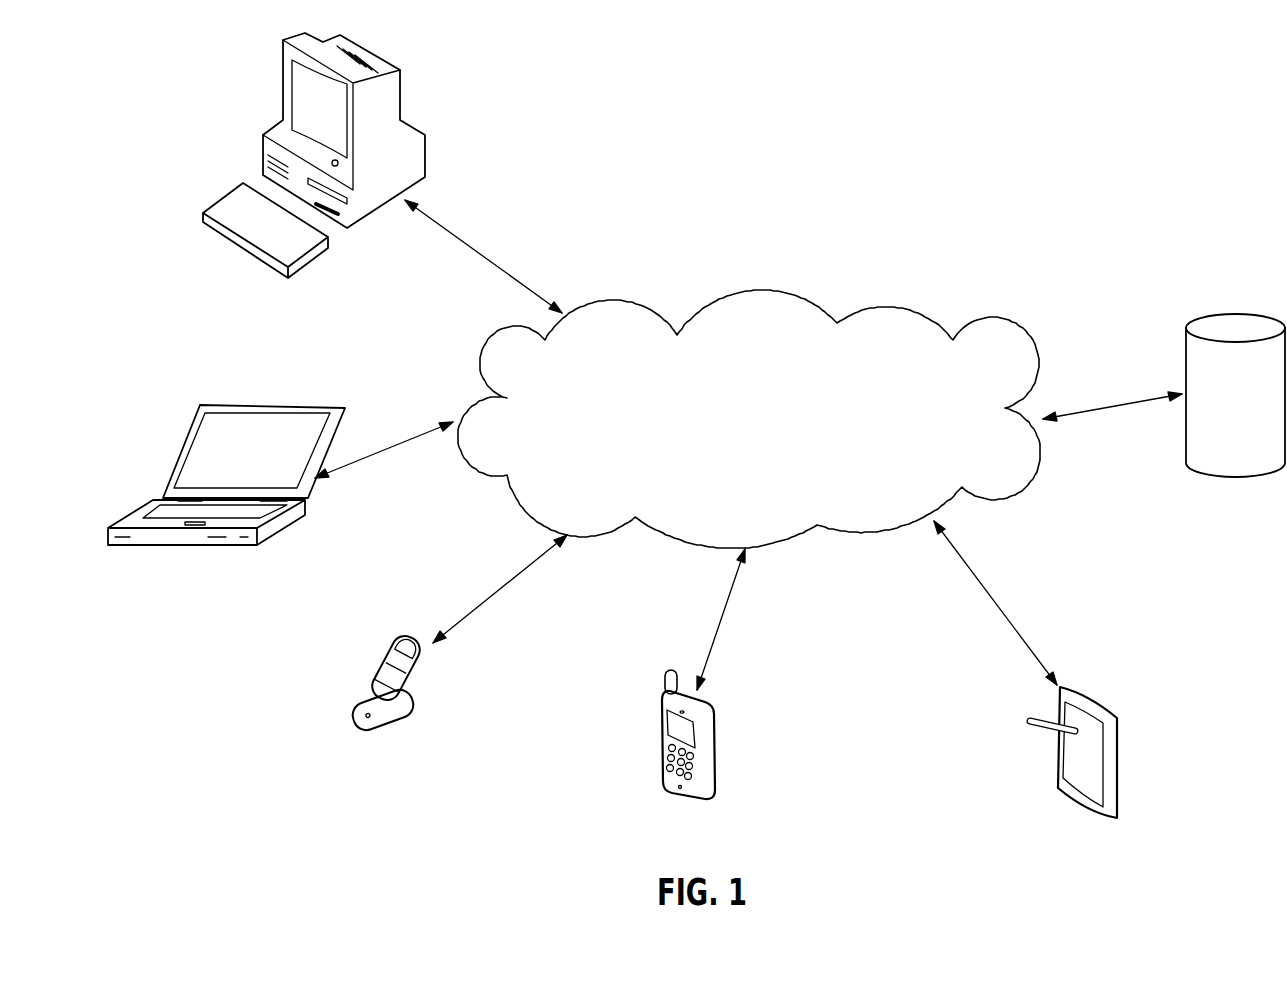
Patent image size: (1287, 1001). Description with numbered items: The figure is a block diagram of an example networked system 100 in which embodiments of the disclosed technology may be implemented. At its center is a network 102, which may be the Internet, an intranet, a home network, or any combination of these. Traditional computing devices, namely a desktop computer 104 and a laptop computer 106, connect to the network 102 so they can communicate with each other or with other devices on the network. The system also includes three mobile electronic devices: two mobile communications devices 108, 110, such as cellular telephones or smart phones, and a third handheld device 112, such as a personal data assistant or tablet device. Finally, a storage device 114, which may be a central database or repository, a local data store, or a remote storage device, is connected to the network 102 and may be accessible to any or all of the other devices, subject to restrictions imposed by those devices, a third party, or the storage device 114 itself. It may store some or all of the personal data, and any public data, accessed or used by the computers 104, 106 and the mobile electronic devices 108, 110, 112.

The networked system 100 is at (1043, 104).
The network 102 is at (723, 489).
The desktop computer 104 is at (382, 173).
The laptop computer 106 is at (280, 475).
The mobile electronic device 108 is at (448, 634).
The mobile electronic device 110 is at (683, 674).
The mobile electronic device 112 is at (1034, 669).
The storage device 114 is at (1216, 414).